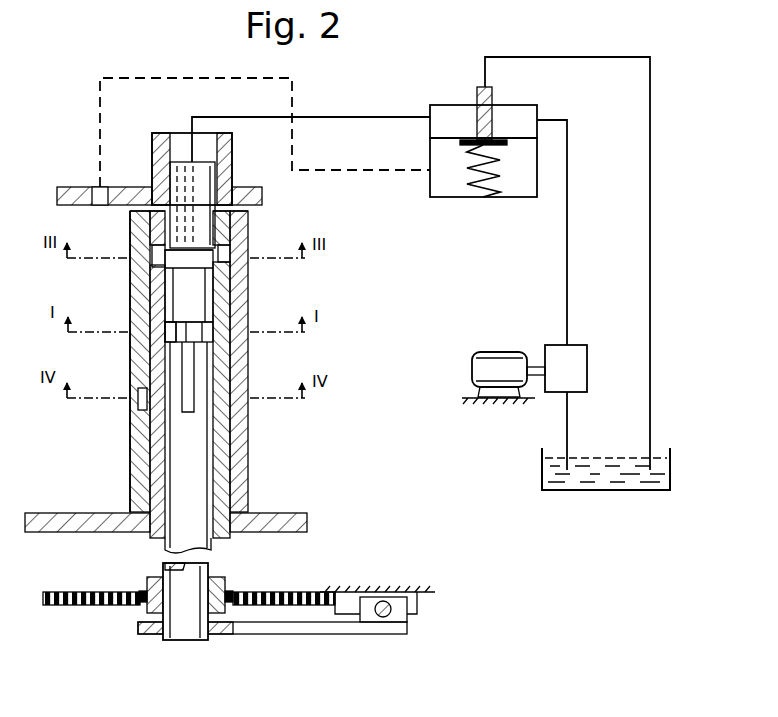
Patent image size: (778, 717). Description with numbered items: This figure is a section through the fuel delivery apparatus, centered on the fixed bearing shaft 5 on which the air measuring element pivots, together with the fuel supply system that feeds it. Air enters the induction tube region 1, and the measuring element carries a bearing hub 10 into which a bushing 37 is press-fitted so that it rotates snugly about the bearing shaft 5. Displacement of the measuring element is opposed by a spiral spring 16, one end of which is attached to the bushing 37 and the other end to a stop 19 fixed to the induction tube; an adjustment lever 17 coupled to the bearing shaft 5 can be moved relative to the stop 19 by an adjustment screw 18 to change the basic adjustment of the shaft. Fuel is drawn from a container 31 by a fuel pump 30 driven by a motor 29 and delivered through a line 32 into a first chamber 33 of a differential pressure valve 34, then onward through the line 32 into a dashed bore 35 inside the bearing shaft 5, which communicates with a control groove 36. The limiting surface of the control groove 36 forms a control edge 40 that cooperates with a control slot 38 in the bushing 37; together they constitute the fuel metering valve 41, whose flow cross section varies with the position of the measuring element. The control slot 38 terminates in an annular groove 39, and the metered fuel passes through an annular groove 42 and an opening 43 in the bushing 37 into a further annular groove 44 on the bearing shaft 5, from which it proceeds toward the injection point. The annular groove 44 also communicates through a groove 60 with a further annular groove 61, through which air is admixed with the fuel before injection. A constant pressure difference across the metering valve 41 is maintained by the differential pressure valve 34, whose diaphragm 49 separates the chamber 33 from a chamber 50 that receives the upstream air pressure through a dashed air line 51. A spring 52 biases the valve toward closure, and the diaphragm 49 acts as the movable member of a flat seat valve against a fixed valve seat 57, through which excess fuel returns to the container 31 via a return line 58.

The region of the air induction tube 1 is at (78, 523).
The bearing shaft 5 is at (188, 447).
The bearing hub 10 is at (138, 453).
The spiral spring 16 is at (92, 603).
The adjustment lever 17 is at (275, 634).
The adjustment screw 18 is at (391, 622).
The stop 19 is at (418, 603).
The motor 29 is at (497, 362).
The fuel pump 30 is at (577, 362).
The container 31 is at (542, 465).
The line 32 is at (368, 117).
The first chamber 33 is at (520, 117).
The differential pressure valve 34 is at (469, 99).
The bore 35 is at (188, 188).
The control groove 36 is at (200, 262).
The bushing 37 is at (220, 475).
The control slot 38 is at (150, 245).
The annular groove 39 is at (232, 258).
The control edge 40 is at (172, 260).
The fuel metering valve 41 is at (125, 276).
The annular groove 42 is at (155, 318).
The opening 43 is at (163, 332).
The annular groove 44 is at (213, 332).
The diaphragm 49 is at (443, 145).
The chamber 50 is at (515, 190).
The air line 51 is at (322, 170).
The spring 52 is at (470, 178).
The fixed valve seat 57 is at (497, 131).
The return line 58 is at (585, 57).
The groove 60 is at (187, 374).
The annular groove 61 is at (130, 412).